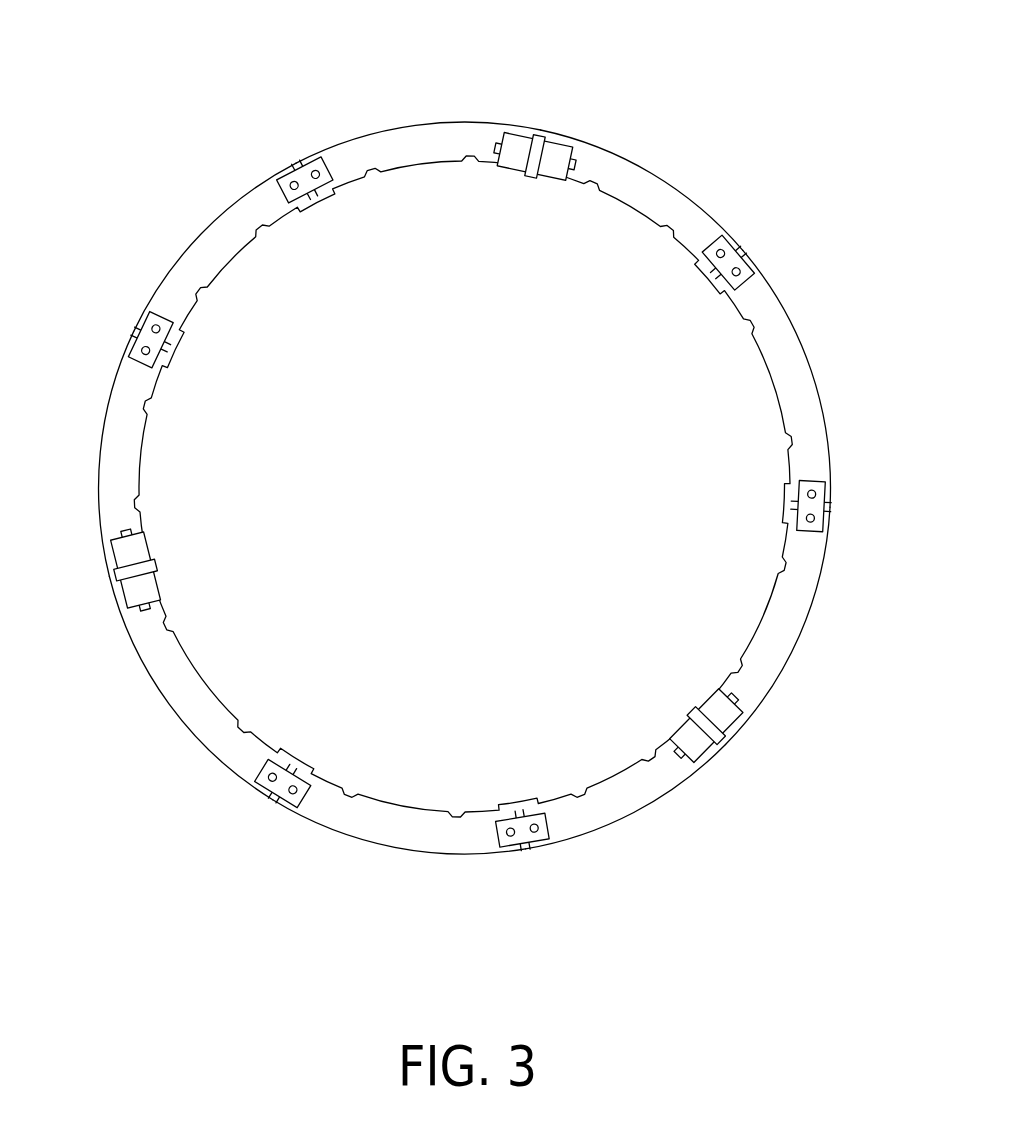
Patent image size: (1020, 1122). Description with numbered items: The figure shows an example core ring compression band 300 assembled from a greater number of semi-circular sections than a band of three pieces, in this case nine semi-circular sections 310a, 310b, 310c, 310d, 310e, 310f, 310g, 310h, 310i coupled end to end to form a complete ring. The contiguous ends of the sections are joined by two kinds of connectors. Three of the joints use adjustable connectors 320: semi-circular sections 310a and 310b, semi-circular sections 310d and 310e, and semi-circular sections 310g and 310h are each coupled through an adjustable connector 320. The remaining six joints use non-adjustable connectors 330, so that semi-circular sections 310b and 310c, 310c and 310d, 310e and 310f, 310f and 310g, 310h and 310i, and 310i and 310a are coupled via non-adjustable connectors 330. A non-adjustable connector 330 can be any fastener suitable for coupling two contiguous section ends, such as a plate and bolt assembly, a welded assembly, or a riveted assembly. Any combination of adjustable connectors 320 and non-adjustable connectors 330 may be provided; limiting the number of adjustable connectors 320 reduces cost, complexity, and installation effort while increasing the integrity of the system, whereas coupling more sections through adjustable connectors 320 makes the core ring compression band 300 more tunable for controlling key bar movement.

The core ring compression band 300 is at (116, 857).
The semi-circular section 310a is at (412, 121).
The semi-circular section 310b is at (665, 182).
The semi-circular section 310c is at (812, 358).
The semi-circular section 310d is at (808, 632).
The semi-circular section 310e is at (620, 817).
The semi-circular section 310f is at (386, 846).
The semi-circular section 310g is at (183, 708).
The semi-circular section 310h is at (102, 478).
The semi-circular section 310i is at (203, 225).
The adjustable connector 320 is at (527, 136).
The non-adjustable connector 330 is at (296, 160).